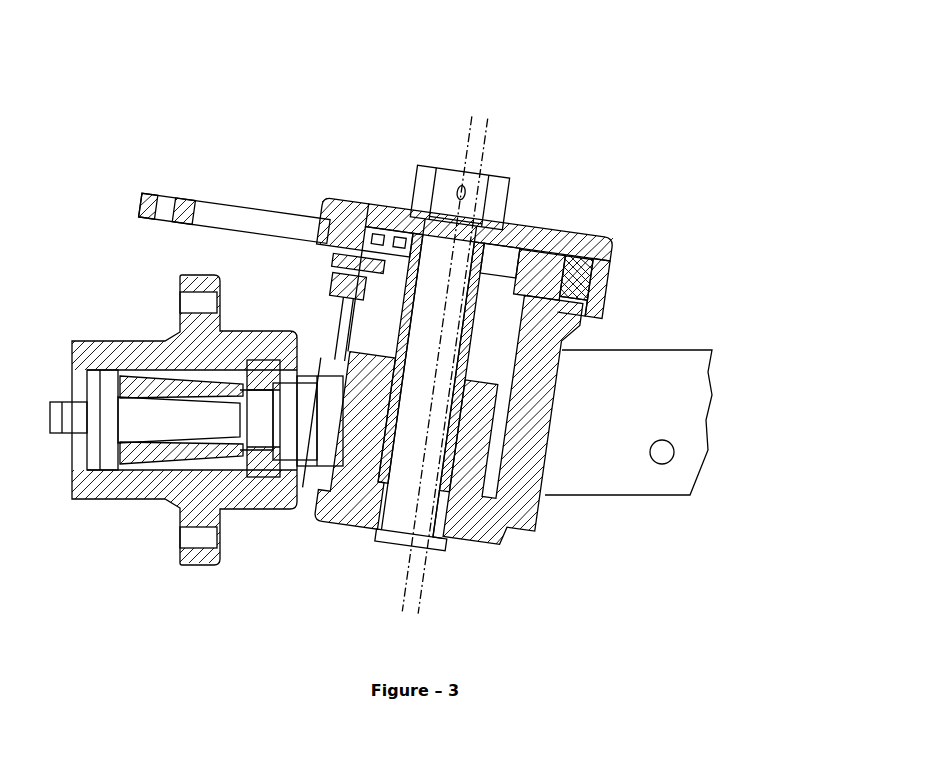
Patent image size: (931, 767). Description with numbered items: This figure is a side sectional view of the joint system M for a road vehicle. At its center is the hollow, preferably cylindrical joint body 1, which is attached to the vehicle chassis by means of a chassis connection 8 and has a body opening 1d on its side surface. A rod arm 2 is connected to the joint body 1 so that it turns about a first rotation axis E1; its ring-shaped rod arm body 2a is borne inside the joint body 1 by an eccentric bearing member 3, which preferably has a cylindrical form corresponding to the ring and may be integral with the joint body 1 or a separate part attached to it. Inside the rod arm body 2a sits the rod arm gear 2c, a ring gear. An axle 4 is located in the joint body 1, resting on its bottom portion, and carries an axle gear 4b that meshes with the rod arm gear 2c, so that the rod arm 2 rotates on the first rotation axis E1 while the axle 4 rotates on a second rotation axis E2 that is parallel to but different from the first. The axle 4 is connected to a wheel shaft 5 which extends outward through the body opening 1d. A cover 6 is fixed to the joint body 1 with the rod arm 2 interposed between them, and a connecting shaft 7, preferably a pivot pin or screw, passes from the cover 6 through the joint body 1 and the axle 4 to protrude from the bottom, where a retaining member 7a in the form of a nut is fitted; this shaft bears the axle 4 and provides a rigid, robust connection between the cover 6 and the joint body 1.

The joint system M is at (150, 150).
The joint body 1 is at (518, 482).
The body opening 1d is at (340, 340).
The rod arm 2 is at (243, 215).
The rod arm body 2a is at (372, 230).
The rod arm gear 2c is at (355, 220).
The eccentric bearing member 3 is at (540, 277).
The axle 4 is at (430, 343).
The axle gear 4b is at (397, 223).
The wheel shaft 5 is at (187, 428).
The cover 6 is at (608, 262).
The connecting shaft 7 is at (485, 188).
The retaining member 7a is at (443, 547).
The chassis connection 8 is at (585, 477).
The first rotation axis E1 is at (488, 117).
The second rotation axis E2 is at (472, 118).